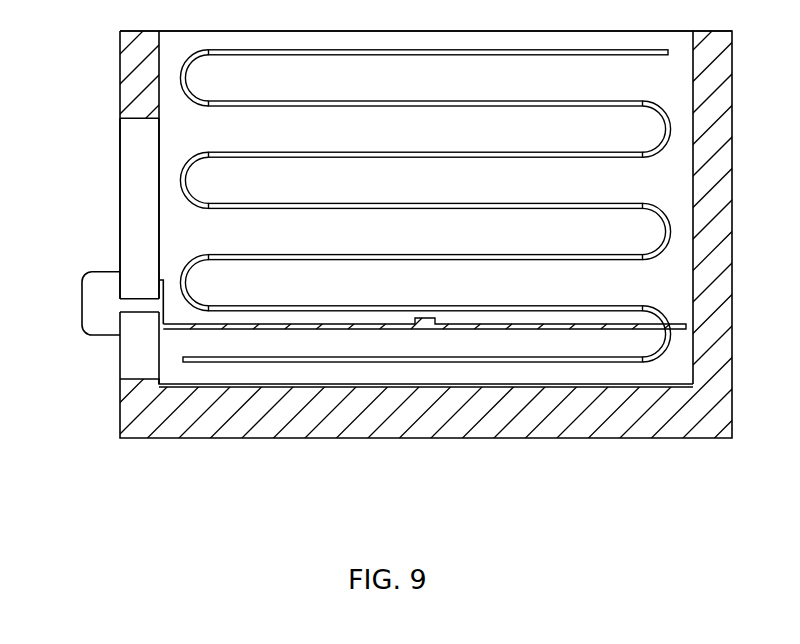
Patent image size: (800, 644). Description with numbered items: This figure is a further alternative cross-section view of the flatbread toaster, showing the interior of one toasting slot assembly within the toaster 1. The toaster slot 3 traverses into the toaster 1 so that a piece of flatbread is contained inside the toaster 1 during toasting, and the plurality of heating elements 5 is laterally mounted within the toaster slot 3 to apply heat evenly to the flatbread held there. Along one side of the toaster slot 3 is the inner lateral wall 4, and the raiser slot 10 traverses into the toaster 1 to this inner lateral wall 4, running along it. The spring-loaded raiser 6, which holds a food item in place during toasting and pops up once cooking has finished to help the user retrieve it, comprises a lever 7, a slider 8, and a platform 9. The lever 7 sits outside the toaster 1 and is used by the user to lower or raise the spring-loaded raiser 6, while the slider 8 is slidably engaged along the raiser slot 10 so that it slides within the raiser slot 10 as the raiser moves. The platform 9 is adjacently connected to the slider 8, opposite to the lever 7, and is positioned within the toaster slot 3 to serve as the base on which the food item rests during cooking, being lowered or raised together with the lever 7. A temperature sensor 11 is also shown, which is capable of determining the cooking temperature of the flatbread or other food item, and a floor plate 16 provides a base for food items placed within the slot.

The toaster 1 is at (742, 432).
The toaster slot 3 is at (450, 29).
The inner lateral wall 4 is at (160, 38).
The heating elements 5 is at (338, 102).
The spring-loaded raiser 6 is at (71, 326).
The lever 7 is at (108, 280).
The slider 8 is at (137, 299).
The platform 9 is at (463, 329).
The raiser slot 10 is at (127, 203).
The temperature sensor 11 is at (433, 318).
The floor plate 16 is at (662, 385).